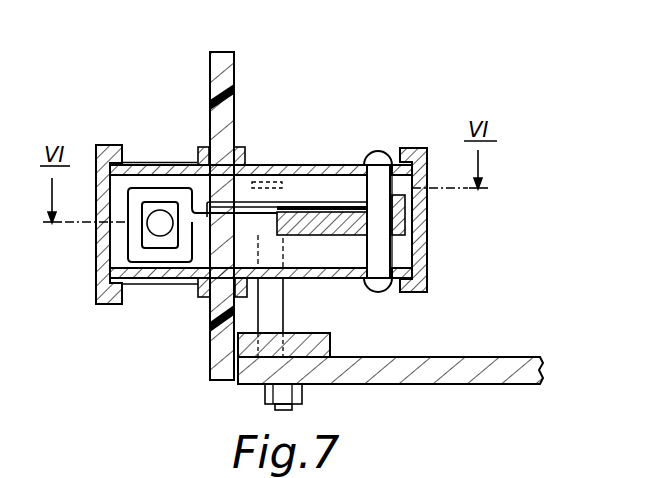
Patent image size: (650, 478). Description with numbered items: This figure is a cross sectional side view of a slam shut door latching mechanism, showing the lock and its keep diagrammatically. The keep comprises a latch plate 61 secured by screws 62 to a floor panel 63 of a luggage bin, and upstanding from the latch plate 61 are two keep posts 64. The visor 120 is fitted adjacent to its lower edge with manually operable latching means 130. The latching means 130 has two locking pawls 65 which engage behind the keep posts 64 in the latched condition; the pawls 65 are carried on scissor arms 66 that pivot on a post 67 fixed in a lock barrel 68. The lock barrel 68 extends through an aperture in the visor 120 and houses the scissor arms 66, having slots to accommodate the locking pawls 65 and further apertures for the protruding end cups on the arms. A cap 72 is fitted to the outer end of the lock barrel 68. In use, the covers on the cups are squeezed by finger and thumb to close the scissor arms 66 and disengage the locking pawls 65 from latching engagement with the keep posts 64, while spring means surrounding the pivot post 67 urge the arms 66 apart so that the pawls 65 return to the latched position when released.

The latch plate 61 is at (330, 344).
The screws 62 is at (211, 322).
The floor panel 63 is at (475, 365).
The keep posts 64 is at (278, 309).
The locking pawls 65 is at (332, 225).
The scissor arms 66 is at (294, 197).
The post 67 is at (383, 156).
The lock barrel 68 is at (355, 160).
The cap 72 is at (112, 146).
The visor 120 is at (222, 67).
The latching means 130 is at (183, 150).